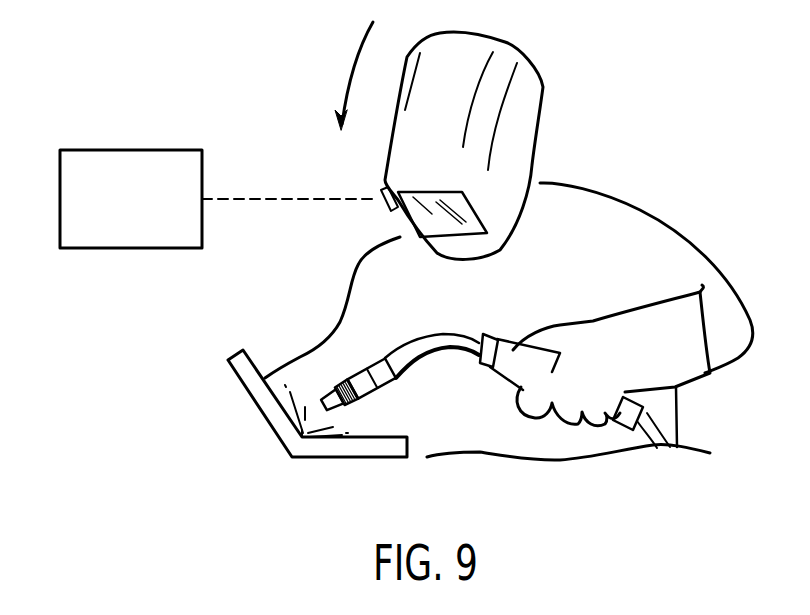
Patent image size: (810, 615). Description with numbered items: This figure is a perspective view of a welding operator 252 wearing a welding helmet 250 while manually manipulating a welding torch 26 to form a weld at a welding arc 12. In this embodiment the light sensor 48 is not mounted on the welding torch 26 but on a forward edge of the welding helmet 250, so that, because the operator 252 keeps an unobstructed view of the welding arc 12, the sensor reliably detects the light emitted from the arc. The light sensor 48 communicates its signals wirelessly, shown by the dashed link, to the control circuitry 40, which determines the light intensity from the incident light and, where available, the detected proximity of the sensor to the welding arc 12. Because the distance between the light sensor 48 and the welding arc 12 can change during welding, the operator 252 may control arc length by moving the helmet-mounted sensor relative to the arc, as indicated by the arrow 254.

The welding arc 12 is at (315, 398).
The welding torch 26 is at (517, 350).
The control circuitry 40 is at (130, 150).
The light sensor 48 is at (385, 204).
The welding helmet 250 is at (510, 130).
The welding operator 252 is at (675, 190).
The arrow 254 is at (352, 70).